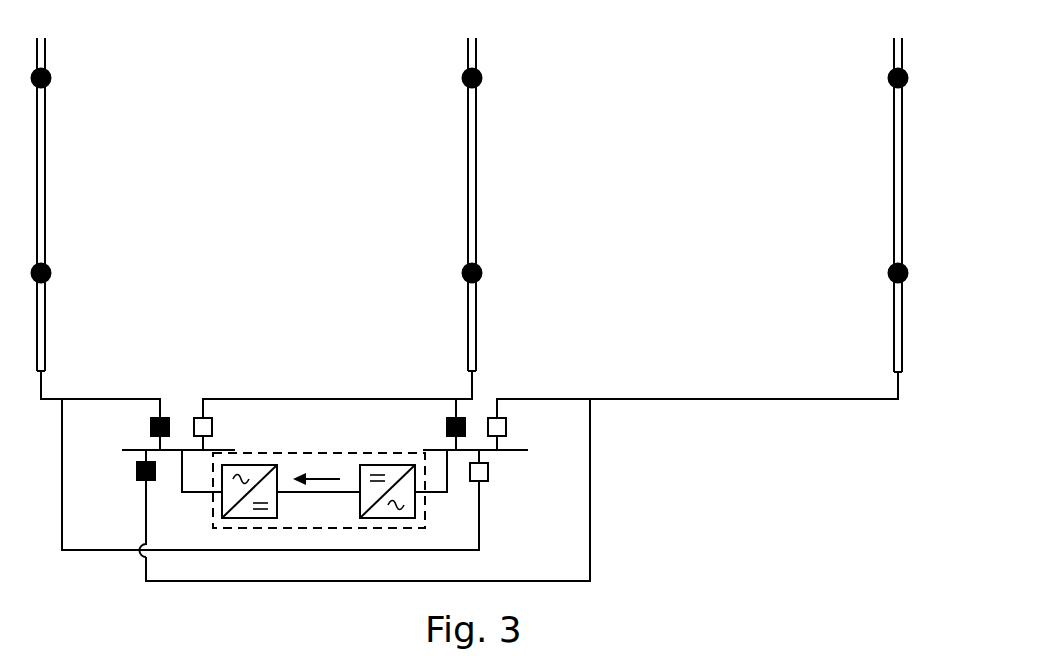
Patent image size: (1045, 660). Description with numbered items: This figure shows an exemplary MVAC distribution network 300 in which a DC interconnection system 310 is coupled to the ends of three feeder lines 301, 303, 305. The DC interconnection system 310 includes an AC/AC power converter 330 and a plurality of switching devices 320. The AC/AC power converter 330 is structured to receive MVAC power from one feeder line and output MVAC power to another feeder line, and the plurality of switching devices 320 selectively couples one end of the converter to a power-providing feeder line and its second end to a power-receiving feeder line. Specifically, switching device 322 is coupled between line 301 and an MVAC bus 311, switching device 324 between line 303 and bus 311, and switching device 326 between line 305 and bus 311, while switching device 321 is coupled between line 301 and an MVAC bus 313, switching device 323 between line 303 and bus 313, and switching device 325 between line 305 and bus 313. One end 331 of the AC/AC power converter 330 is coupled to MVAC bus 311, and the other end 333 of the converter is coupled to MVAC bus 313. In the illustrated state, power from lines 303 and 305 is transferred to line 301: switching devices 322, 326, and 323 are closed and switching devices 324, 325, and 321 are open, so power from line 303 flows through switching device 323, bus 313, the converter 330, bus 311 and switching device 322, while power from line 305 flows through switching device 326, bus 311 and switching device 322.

The MVAC distribution network 300 is at (654, 32).
The feeder line 301 is at (46, 151).
The feeder line 303 is at (477, 151).
The feeder line 305 is at (893, 151).
The DC interconnection system 310 is at (189, 373).
The MVAC bus 311 is at (163, 452).
The MVAC bus 313 is at (458, 452).
The plurality of switching devices 320 is at (538, 508).
The switching device 321 is at (489, 472).
The switching device 322 is at (150, 427).
The switching device 323 is at (447, 427).
The switching device 324 is at (213, 427).
The switching device 325 is at (507, 427).
The switching device 326 is at (137, 472).
The AC/AC power converter 330 is at (314, 452).
The end of AC/AC power converter 331 is at (210, 494).
The second converter 333 is at (430, 494).